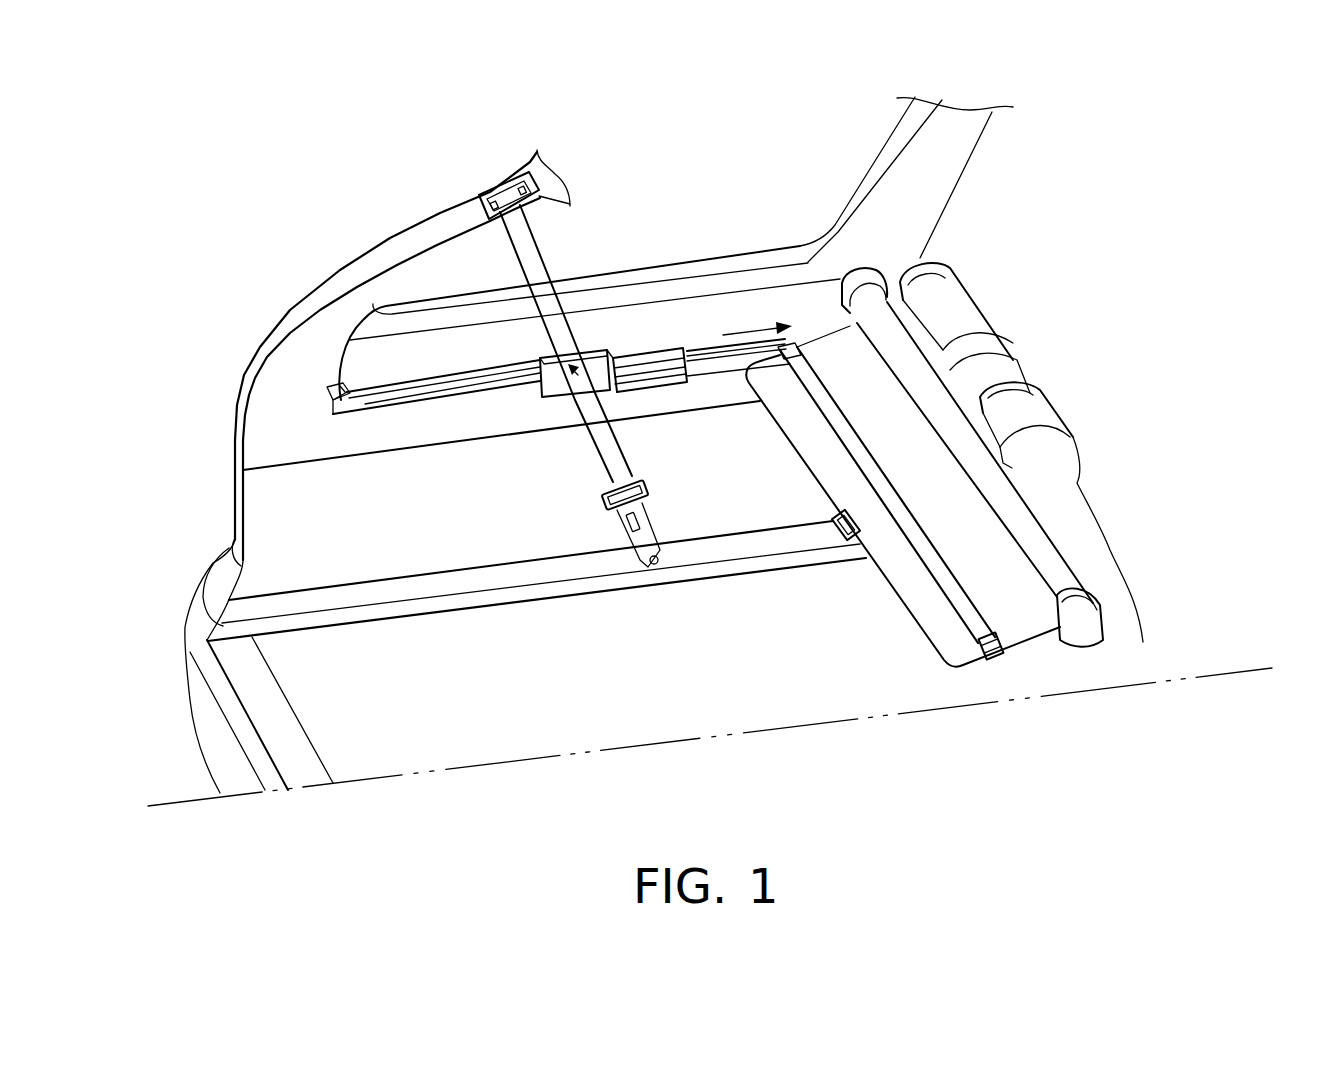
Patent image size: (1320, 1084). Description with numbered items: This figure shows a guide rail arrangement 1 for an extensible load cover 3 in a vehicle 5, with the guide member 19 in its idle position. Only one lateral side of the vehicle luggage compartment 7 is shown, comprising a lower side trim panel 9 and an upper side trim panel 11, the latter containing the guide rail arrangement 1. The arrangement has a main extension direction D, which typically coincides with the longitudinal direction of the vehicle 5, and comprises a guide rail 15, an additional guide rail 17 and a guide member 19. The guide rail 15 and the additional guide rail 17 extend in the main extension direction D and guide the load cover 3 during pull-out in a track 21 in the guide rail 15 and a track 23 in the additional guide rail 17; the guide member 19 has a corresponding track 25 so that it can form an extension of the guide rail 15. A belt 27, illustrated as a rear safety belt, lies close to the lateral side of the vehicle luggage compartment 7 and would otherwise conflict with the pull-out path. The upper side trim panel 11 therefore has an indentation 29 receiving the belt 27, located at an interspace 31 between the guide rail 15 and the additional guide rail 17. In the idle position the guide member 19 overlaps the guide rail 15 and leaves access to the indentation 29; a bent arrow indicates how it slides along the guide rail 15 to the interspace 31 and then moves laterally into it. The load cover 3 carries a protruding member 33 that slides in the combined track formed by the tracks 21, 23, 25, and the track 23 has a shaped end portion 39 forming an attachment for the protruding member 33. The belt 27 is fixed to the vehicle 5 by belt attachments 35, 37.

The guide rail arrangement 1 is at (670, 412).
The load cover 3 is at (1013, 602).
The vehicle 5 is at (226, 165).
The vehicle luggage compartment 7 is at (510, 689).
The lower side trim panel 9 is at (428, 524).
The upper side trim panel 11 is at (311, 438).
The guide rail 15 is at (717, 355).
The additional guide rail 17 is at (380, 392).
The guide member 19 is at (657, 362).
The track 21 is at (705, 362).
The track 23 is at (334, 402).
The track 25 is at (633, 360).
The belt 27 is at (610, 457).
The indentation 29 is at (600, 360).
The interspace 31 is at (546, 354).
The protruding member 33 is at (803, 367).
The belt attachment 35 is at (657, 563).
The belt attachment 37 is at (483, 210).
The shaped end portion 39 is at (265, 365).
The main extension direction D is at (753, 355).